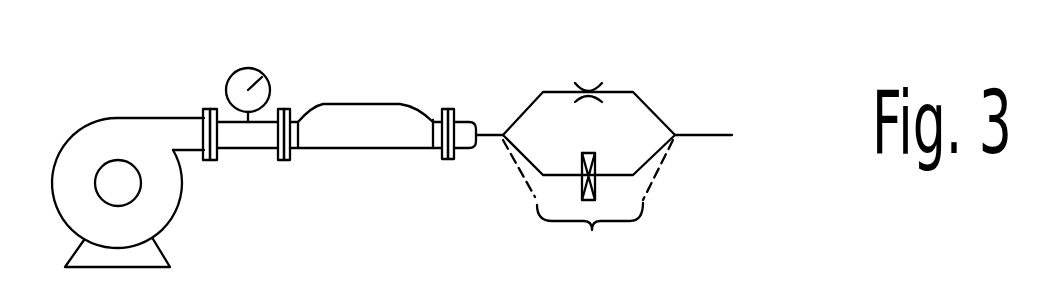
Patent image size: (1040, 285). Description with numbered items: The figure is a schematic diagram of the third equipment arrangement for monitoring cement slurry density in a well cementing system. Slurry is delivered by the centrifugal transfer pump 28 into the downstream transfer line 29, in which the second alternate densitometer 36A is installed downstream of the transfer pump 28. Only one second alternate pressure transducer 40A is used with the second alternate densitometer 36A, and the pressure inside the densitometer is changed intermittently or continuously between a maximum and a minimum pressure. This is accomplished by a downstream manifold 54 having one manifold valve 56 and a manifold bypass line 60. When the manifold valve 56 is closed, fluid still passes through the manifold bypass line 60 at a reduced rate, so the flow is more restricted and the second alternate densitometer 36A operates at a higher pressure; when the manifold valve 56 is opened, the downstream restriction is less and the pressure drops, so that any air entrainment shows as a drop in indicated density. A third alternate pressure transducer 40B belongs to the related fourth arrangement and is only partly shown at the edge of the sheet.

The centrifugal transfer pump 28 is at (132, 117).
The second alternate pressure transducer 40A is at (237, 70).
The second alternate densitometer 36A is at (353, 103).
The downstream transfer line 29 is at (457, 154).
The manifold bypass line 60 is at (612, 92).
The manifold valve 56 is at (590, 129).
The downstream manifold 54 is at (588, 212).
The third alternate pressure transducer 40B is at (281, 276).